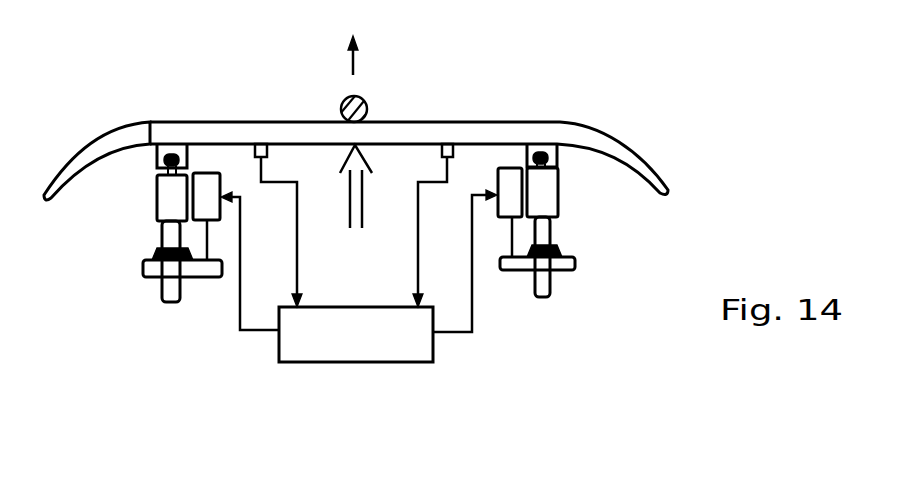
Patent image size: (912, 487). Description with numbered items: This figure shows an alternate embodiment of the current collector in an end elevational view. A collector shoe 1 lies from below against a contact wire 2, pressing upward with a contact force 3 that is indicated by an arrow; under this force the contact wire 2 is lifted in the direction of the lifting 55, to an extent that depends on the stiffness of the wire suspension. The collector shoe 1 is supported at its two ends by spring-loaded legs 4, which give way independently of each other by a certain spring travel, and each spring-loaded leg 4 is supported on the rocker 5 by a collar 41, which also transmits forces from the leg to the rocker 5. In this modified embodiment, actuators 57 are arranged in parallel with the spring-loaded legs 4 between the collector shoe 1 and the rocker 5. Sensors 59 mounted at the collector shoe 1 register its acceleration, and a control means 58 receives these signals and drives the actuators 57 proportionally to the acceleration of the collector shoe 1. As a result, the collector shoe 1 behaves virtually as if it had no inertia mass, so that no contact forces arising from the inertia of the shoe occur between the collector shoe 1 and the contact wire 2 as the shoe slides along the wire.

The collector shoe 1 is at (474, 133).
The contact wire 2 is at (370, 98).
The contact force 3 is at (362, 212).
The spring-loaded leg 4 is at (157, 226).
The rocker 5 is at (192, 268).
The collar 41 is at (150, 255).
The lifting 55 is at (365, 62).
The actuator 57 is at (207, 185).
The control means 58 is at (320, 338).
The sensor 59 is at (258, 146).